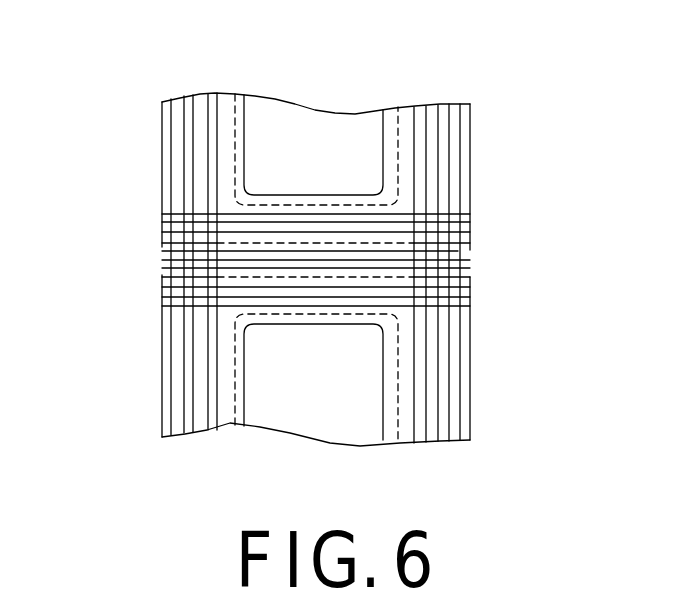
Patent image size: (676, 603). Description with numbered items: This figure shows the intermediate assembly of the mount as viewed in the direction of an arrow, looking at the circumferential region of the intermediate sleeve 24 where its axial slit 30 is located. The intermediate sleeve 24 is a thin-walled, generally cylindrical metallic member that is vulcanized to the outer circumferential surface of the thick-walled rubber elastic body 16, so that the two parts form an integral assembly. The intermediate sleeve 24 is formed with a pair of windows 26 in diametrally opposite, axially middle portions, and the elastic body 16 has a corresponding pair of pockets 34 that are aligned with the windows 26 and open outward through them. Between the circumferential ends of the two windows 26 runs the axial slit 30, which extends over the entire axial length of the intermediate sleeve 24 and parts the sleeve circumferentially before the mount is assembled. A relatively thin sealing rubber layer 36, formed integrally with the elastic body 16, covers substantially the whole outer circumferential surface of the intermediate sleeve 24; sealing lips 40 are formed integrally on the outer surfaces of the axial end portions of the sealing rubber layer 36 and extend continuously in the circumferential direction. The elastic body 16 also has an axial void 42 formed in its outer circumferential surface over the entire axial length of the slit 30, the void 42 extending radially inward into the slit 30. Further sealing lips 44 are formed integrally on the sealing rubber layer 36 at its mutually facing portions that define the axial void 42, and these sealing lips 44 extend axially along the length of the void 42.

The elastic body 16 is at (408, 397).
The intermediate sleeve 24 is at (167, 403).
The window 26 is at (251, 115).
The axial slit 30 is at (458, 251).
The pocket 34 is at (388, 155).
The sealing rubber layer 36 is at (175, 138).
The sealing lips 40 is at (177, 117).
The axial void 42 is at (172, 262).
The sealing lips 44 is at (293, 215).